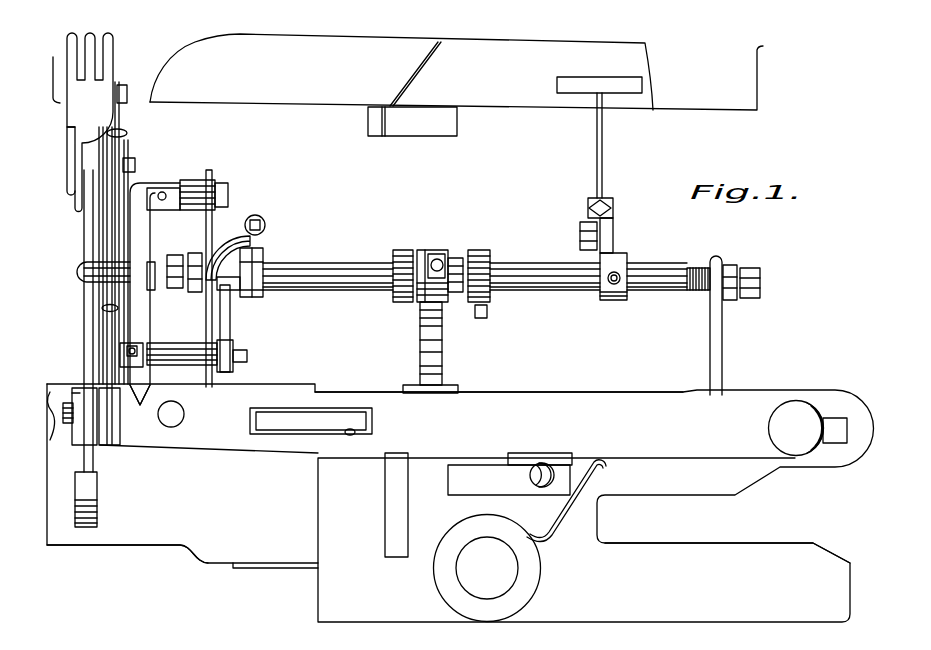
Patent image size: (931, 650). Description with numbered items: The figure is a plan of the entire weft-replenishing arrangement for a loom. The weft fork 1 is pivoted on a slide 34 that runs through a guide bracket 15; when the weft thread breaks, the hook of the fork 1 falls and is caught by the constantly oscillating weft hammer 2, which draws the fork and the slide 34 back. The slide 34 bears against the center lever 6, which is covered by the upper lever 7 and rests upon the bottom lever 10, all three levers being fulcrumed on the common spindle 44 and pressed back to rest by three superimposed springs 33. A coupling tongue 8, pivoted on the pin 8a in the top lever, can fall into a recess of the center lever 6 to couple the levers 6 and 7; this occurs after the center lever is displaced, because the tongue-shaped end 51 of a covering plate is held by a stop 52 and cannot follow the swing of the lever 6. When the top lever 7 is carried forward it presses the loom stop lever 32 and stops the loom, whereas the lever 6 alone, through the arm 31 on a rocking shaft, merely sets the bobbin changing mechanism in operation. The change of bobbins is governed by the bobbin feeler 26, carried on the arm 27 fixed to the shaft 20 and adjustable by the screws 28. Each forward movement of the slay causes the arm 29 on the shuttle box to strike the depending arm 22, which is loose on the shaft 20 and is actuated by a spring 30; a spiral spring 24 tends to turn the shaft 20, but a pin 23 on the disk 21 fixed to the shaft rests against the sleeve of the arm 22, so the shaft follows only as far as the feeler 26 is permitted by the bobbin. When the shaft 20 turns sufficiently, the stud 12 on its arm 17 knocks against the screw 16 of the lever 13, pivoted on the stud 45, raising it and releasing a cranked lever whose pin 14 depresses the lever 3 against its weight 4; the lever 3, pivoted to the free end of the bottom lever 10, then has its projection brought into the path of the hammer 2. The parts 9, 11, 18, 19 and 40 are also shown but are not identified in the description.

The weft fork 1 is at (85, 92).
The weft hammer 2 is at (70, 140).
The lever 3 is at (88, 316).
The weight 4 is at (98, 506).
The center lever 6 is at (112, 446).
The upper lever 7 is at (328, 393).
The coupling tongue 8 is at (278, 422).
The pin 8a is at (350, 436).
The hole 9 is at (180, 416).
The bottom lever 10 is at (82, 447).
The pointed end of bracket 11 is at (146, 334).
The stud 12 is at (177, 362).
The lever 13 is at (146, 243).
The pin 14 is at (80, 273).
The guide bracket 15 is at (128, 134).
The screw 16 is at (134, 360).
The arm 17 is at (230, 333).
The hub 18 is at (258, 263).
The handle knob 19 is at (266, 223).
The shaft 20 is at (339, 283).
The disk 21 is at (404, 255).
The depending arm 22 is at (421, 306).
The pin 23 is at (436, 262).
The spiral spring 24 is at (458, 297).
The bobbin feeler 26 is at (603, 152).
The arm 27 is at (626, 262).
The screws 28 is at (614, 206).
The arm 29 is at (424, 128).
The spring 30 is at (442, 366).
The arm 31 is at (392, 479).
The loom stop lever 32 is at (538, 477).
The springs 33 is at (558, 522).
The slide 34 is at (112, 331).
The frame 40 is at (158, 543).
The common spindle 44 is at (796, 410).
The stud 45 is at (229, 195).
The tongue-shaped end 51 is at (60, 420).
The stop 52 is at (75, 396).